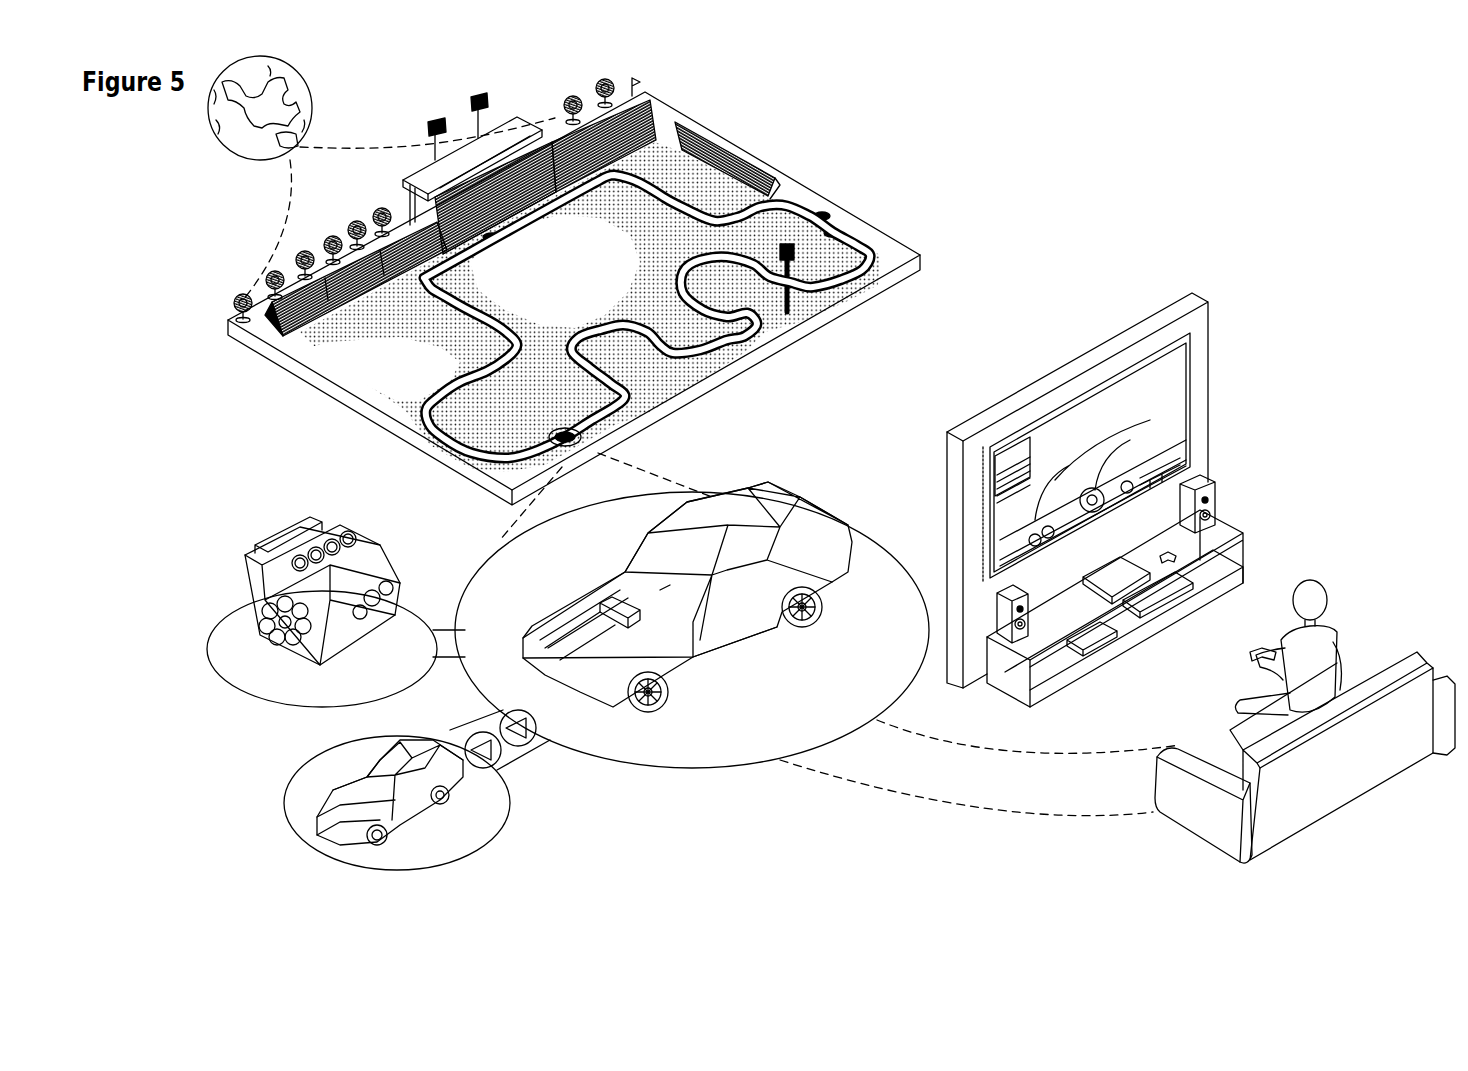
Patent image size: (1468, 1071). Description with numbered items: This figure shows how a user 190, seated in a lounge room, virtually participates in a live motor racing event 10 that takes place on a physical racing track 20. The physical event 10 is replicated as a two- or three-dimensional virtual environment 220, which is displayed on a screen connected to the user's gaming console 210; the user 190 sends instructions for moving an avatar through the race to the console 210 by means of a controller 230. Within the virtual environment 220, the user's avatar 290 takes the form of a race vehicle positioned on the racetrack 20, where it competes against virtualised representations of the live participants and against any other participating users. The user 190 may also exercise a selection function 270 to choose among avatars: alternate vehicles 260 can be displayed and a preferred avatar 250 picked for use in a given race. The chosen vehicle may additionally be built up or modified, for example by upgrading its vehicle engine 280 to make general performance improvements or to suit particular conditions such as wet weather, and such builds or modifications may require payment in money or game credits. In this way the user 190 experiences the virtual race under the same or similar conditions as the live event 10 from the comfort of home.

The racing event 10 is at (293, 145).
The racing track 20 is at (717, 357).
The user's avatar 290 is at (580, 440).
The engine upgrade component 280 is at (367, 567).
The selected avatar 250 is at (687, 653).
The avatar selection 270 is at (508, 740).
The alternate vehicles 260 is at (447, 803).
The virtual environment 220 is at (1050, 432).
The gaming console 210 is at (1120, 577).
The controller 230 is at (1258, 654).
The user 190 is at (1315, 648).